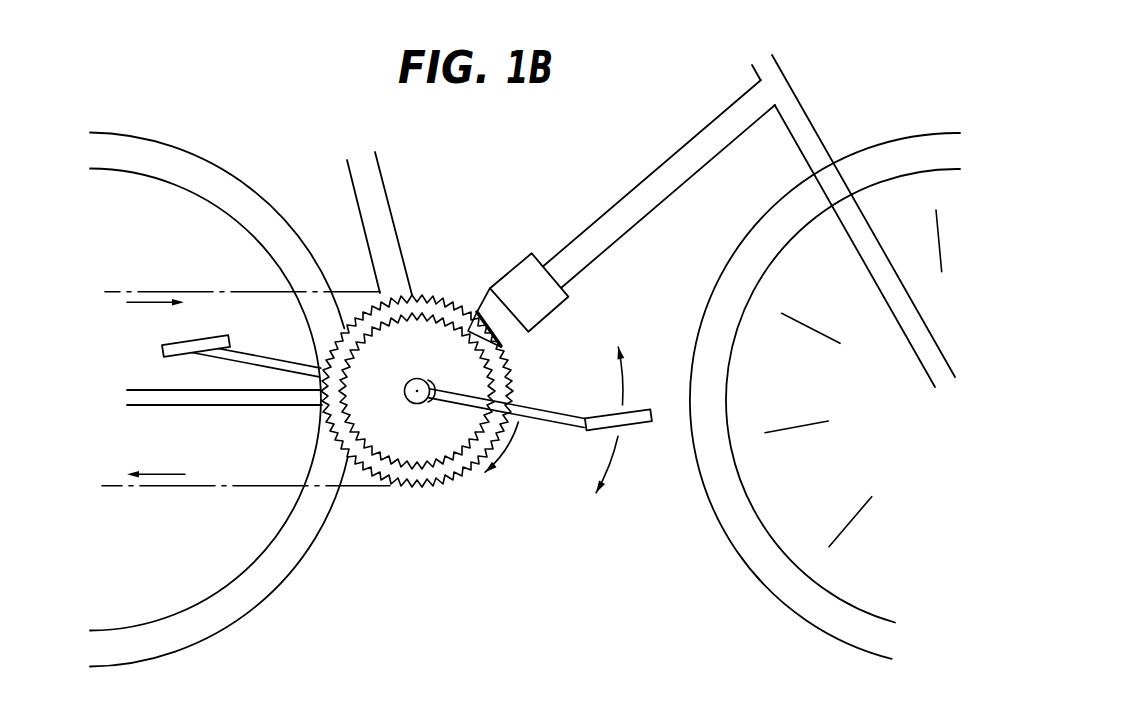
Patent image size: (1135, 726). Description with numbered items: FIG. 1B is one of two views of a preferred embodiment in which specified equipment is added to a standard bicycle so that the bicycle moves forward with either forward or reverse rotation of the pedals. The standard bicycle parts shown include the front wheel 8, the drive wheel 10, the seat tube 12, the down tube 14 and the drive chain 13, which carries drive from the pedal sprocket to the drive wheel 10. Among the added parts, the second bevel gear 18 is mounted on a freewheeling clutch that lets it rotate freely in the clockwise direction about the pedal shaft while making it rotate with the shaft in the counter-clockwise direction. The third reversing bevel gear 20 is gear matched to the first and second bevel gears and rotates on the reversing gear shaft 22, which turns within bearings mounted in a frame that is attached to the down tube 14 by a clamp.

The front wheel 8 is at (898, 136).
The drive wheel 10 is at (223, 168).
The seat tube 12 is at (387, 196).
The drive chain 13 is at (157, 291).
The down tube 14 is at (694, 172).
The second bevel gear 18 is at (392, 438).
The third reversing bevel gear 20 is at (477, 311).
The reversing gear shaft 22 is at (505, 337).